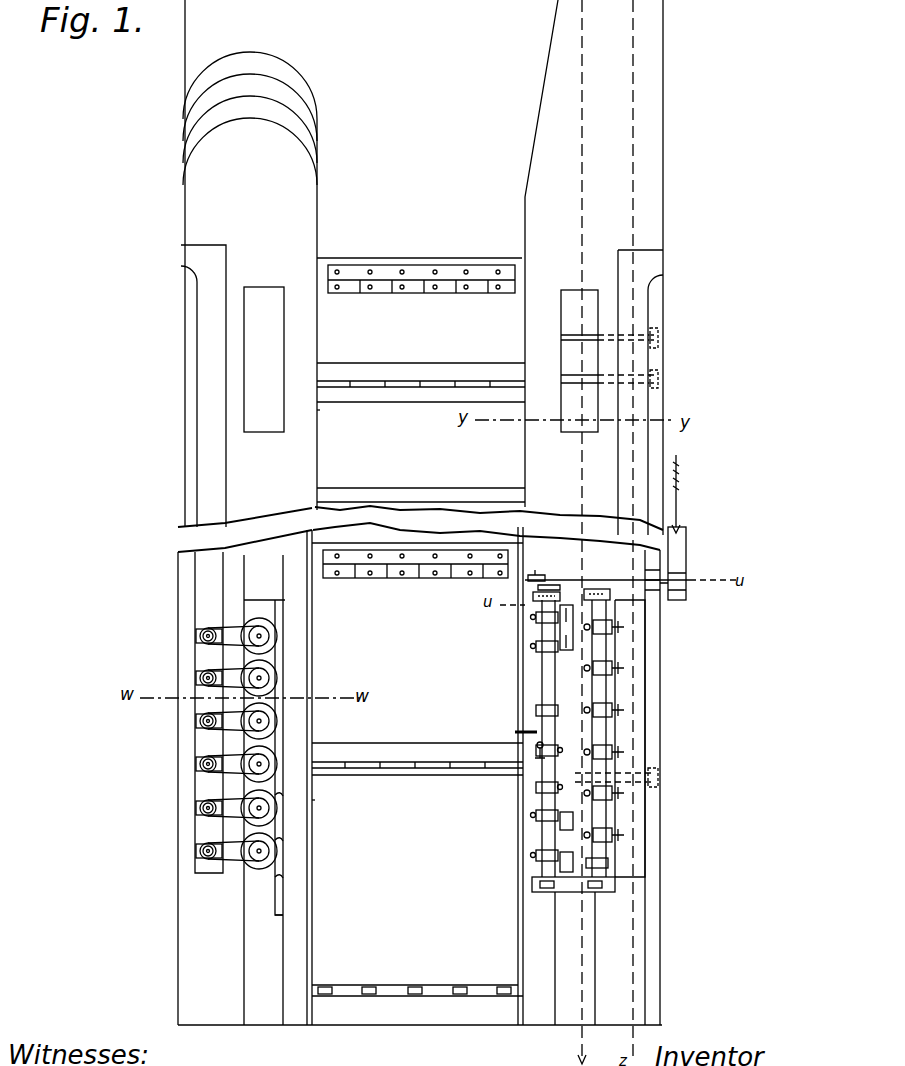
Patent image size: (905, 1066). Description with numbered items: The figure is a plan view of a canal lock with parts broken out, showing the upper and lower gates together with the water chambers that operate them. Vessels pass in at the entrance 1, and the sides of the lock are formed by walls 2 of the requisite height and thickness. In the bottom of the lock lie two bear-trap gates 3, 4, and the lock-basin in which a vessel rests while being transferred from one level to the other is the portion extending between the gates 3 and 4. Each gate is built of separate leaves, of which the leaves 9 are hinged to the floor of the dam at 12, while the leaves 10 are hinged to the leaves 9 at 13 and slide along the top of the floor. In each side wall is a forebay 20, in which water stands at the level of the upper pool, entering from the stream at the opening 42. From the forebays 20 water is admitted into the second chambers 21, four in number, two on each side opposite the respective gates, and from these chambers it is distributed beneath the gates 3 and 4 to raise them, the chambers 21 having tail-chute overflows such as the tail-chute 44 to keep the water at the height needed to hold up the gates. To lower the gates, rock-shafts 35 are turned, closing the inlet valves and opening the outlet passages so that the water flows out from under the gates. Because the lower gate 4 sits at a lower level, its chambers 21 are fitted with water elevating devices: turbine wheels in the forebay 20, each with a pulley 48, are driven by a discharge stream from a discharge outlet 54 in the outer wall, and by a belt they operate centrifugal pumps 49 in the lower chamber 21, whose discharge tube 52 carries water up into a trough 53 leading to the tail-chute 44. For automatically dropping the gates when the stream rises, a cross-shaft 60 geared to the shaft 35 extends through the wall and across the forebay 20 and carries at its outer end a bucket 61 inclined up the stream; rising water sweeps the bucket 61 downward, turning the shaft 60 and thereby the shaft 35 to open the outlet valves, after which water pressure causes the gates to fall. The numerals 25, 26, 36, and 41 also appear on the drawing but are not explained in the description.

The entrance to the lock 1 is at (424, 530).
The walls 2 is at (393, 281).
The bear-trap gate 3 is at (376, 416).
The bear-trap gate 4 is at (365, 813).
The leaf 9 is at (415, 641).
The leaf 10 is at (418, 711).
The hinge 12 is at (432, 258).
The hinge 13 is at (412, 757).
The forebay 20 is at (664, 619).
The second chamber 21 is at (526, 641).
The roller bar 25 is at (612, 690).
The lower roller bar 26 is at (615, 752).
The rock-shaft 35 is at (541, 688).
The pivot pin 36 is at (534, 746).
The stop 41 is at (512, 730).
The opening 42 is at (421, 390).
The tail-chute 44 is at (571, 1010).
The pulley 48 is at (200, 674).
The centrifugal pump 49 is at (280, 677).
The discharge tube 52 is at (290, 831).
The trough 53 is at (278, 895).
The discharge outlet 54 is at (573, 650).
The cross-shaft 60 is at (617, 586).
The bucket 61 is at (690, 527).